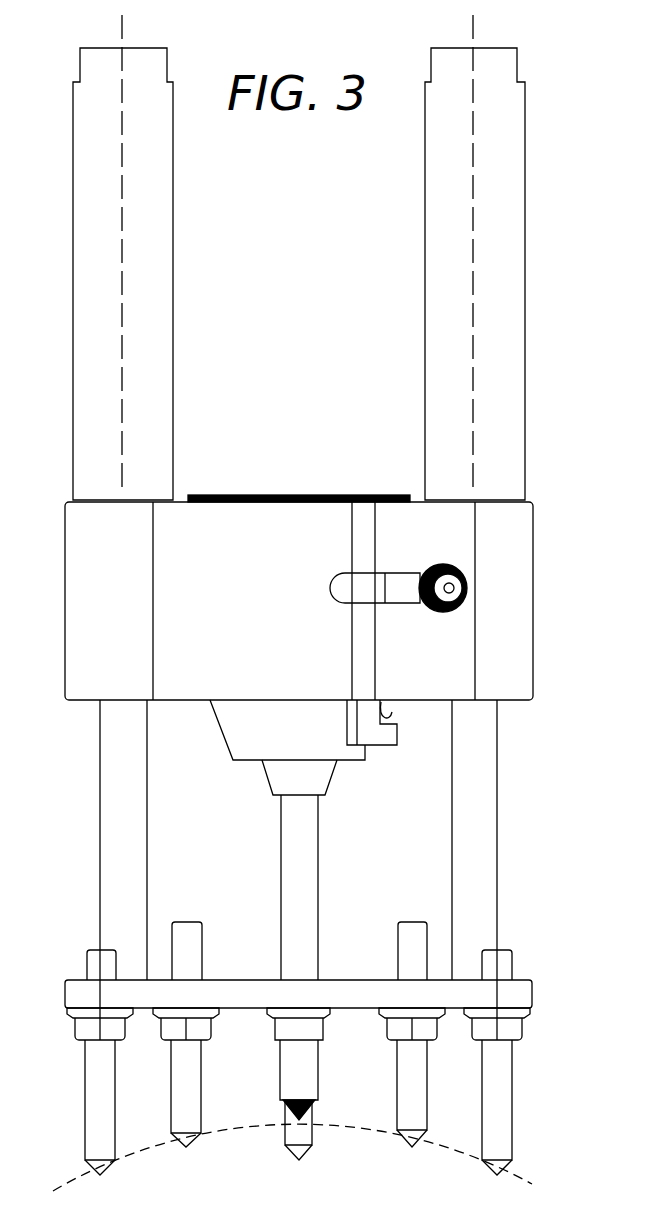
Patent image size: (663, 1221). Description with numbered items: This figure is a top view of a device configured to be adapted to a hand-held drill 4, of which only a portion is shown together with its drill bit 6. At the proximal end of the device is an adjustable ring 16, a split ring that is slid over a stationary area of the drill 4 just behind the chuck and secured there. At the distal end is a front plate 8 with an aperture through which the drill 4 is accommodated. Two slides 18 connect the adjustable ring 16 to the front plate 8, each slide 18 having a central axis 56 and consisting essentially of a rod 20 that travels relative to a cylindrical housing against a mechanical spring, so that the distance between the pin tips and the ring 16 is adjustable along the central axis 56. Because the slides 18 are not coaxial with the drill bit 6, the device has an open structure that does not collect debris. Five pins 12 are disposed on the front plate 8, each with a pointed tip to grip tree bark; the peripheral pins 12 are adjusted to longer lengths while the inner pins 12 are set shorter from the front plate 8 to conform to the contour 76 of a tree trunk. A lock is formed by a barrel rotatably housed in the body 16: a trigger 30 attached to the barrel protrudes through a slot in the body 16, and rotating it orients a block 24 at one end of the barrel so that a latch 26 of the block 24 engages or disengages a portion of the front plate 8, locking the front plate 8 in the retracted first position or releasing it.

The drill 4 is at (222, 730).
The drill bit 6 is at (305, 1055).
The front plate 8 is at (528, 992).
The pins 12 is at (85, 1068).
The adjustable ring 16 is at (520, 530).
The slide 18 is at (165, 331).
The rod 20 is at (138, 873).
The block 24 is at (370, 748).
The latch 26 is at (390, 714).
The trigger 30 is at (460, 575).
The central axis 56 is at (122, 203).
The contour 76 is at (518, 1172).